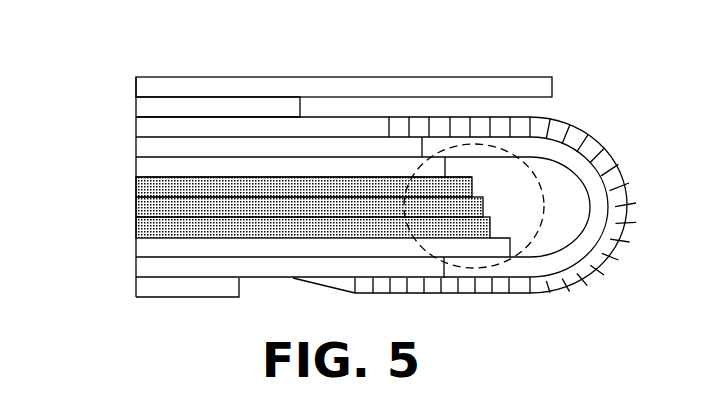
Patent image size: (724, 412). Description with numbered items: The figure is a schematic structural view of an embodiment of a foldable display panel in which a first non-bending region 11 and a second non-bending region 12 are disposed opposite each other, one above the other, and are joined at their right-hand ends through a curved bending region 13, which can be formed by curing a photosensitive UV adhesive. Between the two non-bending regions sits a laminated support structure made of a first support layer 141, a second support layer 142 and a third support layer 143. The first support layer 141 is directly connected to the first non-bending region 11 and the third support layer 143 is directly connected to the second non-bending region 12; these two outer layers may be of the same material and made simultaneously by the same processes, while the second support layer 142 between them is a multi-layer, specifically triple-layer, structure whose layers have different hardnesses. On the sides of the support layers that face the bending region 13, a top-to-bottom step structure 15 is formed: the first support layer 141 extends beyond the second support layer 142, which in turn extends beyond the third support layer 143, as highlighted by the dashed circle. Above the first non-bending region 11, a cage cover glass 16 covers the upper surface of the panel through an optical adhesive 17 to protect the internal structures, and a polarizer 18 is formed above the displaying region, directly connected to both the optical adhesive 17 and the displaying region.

The first non-bending region 11 is at (330, 155).
The second non-bending region 12 is at (261, 211).
The bending region 13 is at (567, 223).
The step structure 15 is at (490, 193).
The cage cover glass 16 is at (320, 92).
The optical adhesive 17 is at (248, 108).
The polarizer 18 is at (157, 149).
The first support layer 141 is at (157, 169).
The second support layer 142 is at (127, 236).
The third support layer 143 is at (160, 248).